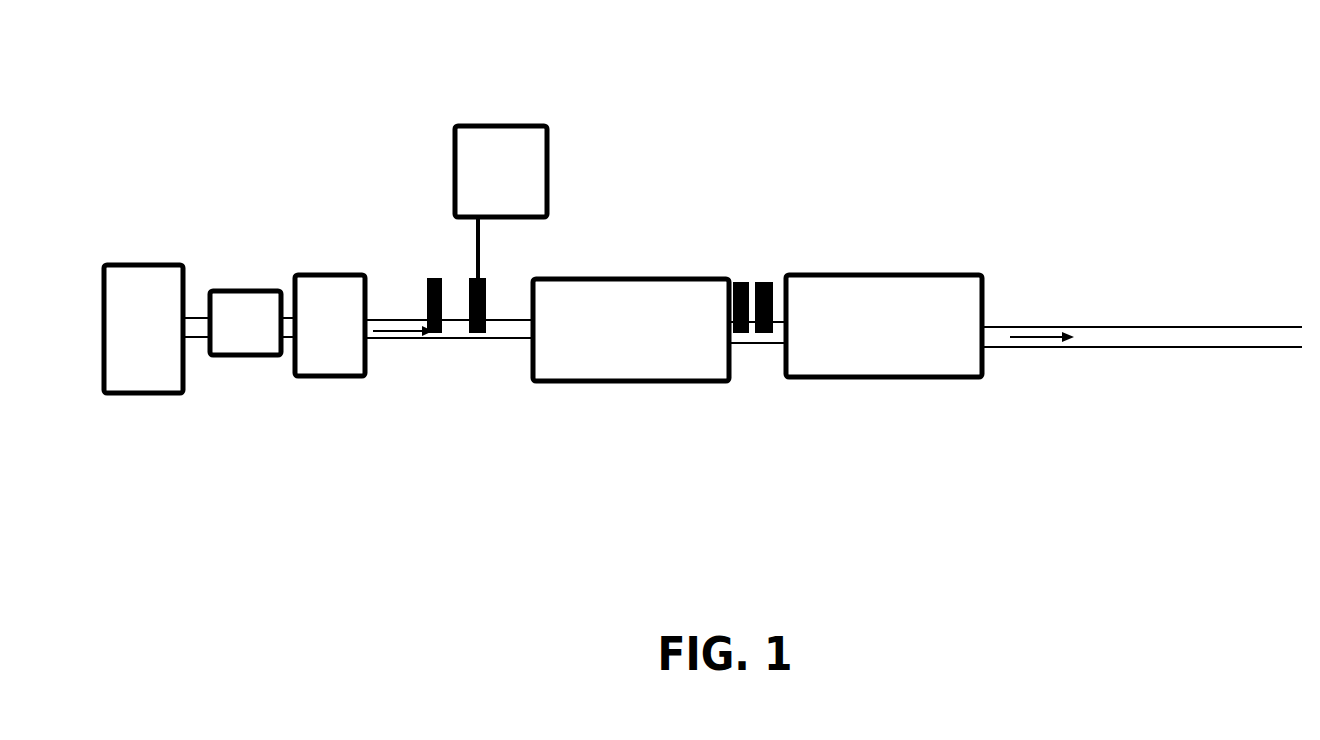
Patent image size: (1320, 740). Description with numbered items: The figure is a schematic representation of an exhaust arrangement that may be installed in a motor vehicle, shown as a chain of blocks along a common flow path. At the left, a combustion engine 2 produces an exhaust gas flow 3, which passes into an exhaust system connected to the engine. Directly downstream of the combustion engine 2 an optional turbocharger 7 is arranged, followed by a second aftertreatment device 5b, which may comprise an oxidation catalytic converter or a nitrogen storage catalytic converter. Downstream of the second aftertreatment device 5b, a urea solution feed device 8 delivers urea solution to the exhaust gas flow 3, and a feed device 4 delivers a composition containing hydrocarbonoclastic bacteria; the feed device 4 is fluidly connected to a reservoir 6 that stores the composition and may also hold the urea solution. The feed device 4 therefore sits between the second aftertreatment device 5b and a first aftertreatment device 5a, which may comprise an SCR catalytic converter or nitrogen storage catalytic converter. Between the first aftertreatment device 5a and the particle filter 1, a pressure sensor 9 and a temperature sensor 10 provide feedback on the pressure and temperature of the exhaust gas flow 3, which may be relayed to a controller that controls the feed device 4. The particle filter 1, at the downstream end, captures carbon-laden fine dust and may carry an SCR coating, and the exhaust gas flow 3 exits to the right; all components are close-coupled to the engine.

The particle filter 1 is at (885, 275).
The combustion engine 2 is at (143, 263).
The exhaust gas flow 3 is at (387, 331).
The feed device 4 is at (478, 340).
The first aftertreatment device 5a is at (630, 278).
The second aftertreatment device 5b is at (330, 275).
The reservoir 6 is at (488, 124).
The turbocharger 7 is at (248, 291).
The urea solution feed device 8 is at (432, 335).
The pressure sensor 9 is at (740, 282).
The temperature sensor 10 is at (763, 282).